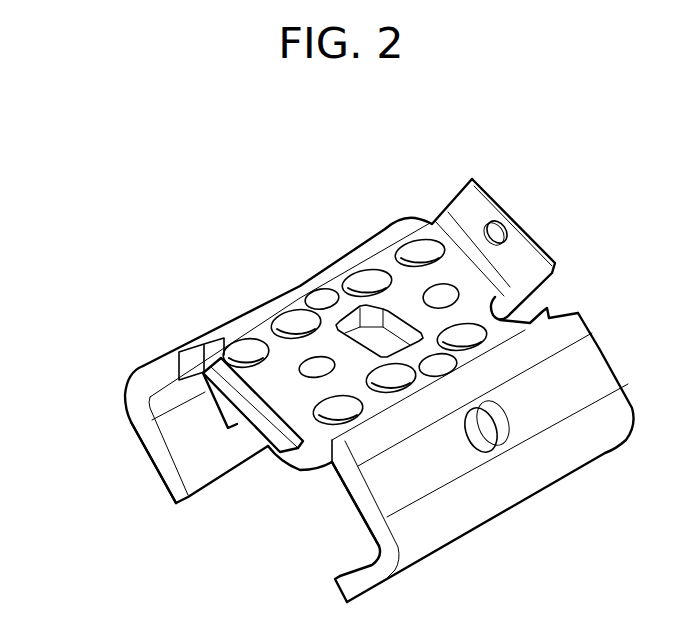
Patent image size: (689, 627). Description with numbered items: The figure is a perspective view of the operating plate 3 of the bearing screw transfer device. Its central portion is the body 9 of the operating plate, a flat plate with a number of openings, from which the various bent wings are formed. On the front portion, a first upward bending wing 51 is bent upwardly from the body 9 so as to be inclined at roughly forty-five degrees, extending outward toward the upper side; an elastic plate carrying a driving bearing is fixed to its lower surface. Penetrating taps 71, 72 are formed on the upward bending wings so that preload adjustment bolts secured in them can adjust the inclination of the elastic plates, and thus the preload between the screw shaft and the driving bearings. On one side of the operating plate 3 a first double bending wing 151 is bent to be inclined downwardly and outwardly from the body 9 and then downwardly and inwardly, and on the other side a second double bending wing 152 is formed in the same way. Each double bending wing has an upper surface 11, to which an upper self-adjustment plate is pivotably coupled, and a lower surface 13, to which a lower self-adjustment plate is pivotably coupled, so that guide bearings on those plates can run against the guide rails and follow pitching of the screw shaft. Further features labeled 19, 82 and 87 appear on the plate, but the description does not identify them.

The operating plate 3 is at (266, 252).
The body of the operating plate 9 is at (386, 261).
The hole 19 is at (279, 323).
The penetrating tap 72 is at (508, 215).
The tab hole 82 is at (522, 249).
The side hole 87 is at (489, 421).
The upper surface of the double bending wing 11 is at (131, 371).
The lower surface of the double bending wing 13 is at (142, 444).
The first double bending wing 151 is at (271, 549).
The second double bending wing 152 is at (55, 416).
The penetrating tap 71 is at (260, 432).
The first upward bending wing 51 is at (259, 433).